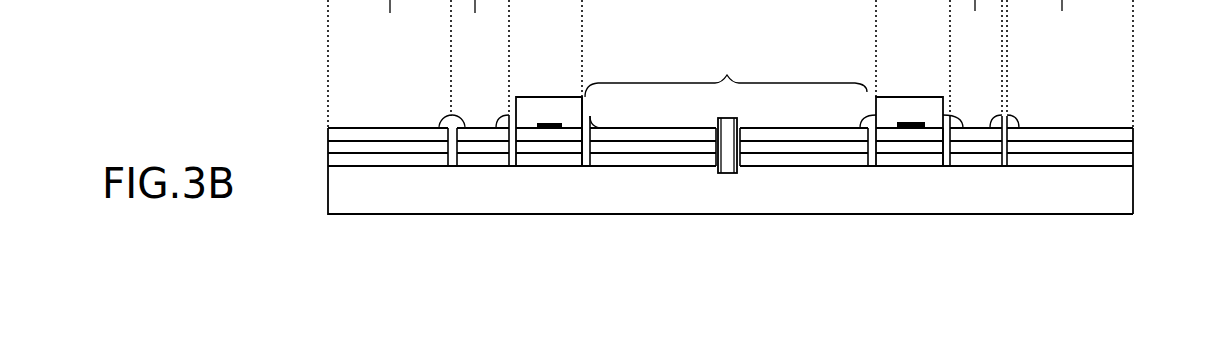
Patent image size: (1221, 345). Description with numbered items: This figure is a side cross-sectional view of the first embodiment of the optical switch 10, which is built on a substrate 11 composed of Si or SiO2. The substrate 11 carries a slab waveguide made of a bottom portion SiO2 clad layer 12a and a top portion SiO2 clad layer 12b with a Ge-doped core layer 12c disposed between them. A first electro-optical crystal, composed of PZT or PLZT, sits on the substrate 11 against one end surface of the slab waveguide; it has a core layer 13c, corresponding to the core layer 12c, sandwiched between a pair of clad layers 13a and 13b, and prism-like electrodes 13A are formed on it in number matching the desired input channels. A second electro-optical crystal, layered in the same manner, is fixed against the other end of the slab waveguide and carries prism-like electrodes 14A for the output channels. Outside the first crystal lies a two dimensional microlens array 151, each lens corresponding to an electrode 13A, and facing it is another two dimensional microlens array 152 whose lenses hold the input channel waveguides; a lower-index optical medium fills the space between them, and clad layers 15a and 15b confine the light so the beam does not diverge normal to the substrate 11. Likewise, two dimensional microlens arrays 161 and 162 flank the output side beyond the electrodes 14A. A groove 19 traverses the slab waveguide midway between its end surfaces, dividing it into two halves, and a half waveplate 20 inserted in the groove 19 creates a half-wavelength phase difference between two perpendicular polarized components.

The optical switch 10 is at (773, 214).
The substrate 11 is at (1125, 192).
The bottom portion SiO2 clad layer 12a is at (759, 156).
The top portion SiO2 clad layer 12b is at (602, 132).
The core layer 12c is at (648, 146).
The electrodes 13A is at (570, 0).
The clad layer 13a is at (534, 128).
The clad layer 13b is at (568, 128).
The core layer 13c is at (534, 128).
The electrodes 14A is at (874, 0).
The clad layer 15a is at (437, 158).
The clad layer 15b is at (482, 134).
The two dimensional microlens array 151 is at (481, 106).
The two dimensional microlens array 152 is at (396, 106).
The two dimensional microlens array 161 is at (982, 106).
The two dimensional microlens array 162 is at (1068, 106).
The groove 19 is at (712, 173).
The half waveplate 20 is at (737, 117).